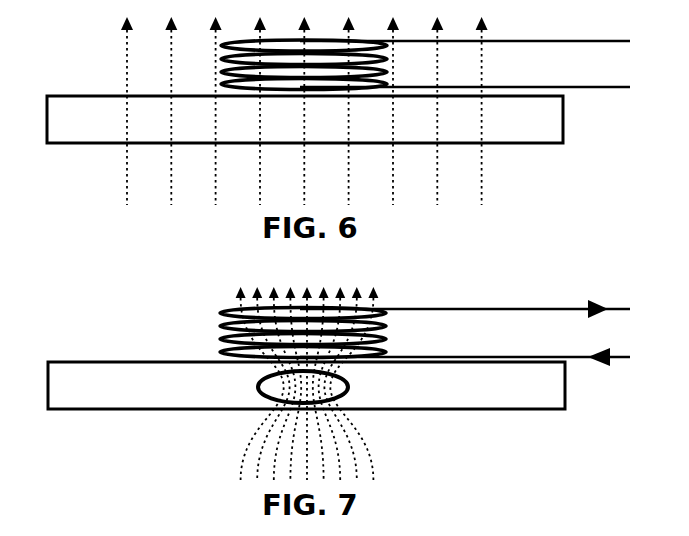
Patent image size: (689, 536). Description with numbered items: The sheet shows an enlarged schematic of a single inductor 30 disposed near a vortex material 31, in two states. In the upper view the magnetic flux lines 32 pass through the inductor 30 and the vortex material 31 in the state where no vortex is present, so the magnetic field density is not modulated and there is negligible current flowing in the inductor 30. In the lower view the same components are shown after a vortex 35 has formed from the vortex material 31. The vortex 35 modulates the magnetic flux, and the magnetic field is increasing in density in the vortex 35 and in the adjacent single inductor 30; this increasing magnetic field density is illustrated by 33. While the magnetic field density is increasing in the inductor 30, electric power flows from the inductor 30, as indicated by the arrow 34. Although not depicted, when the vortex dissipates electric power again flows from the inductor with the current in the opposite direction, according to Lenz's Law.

In FIG. 6, the single inductor 30 is at (387, 77).
In FIG. 6, the vortex material 31 is at (508, 120).
In FIG. 6, the magnetic flux lines 32 is at (482, 203).
In FIG. 7, the increasing magnetic field density 33 is at (375, 300).
In FIG. 7, the arrow indicating electric power flow 34 is at (593, 308).
In FIG. 7, the vortex 35 is at (350, 391).